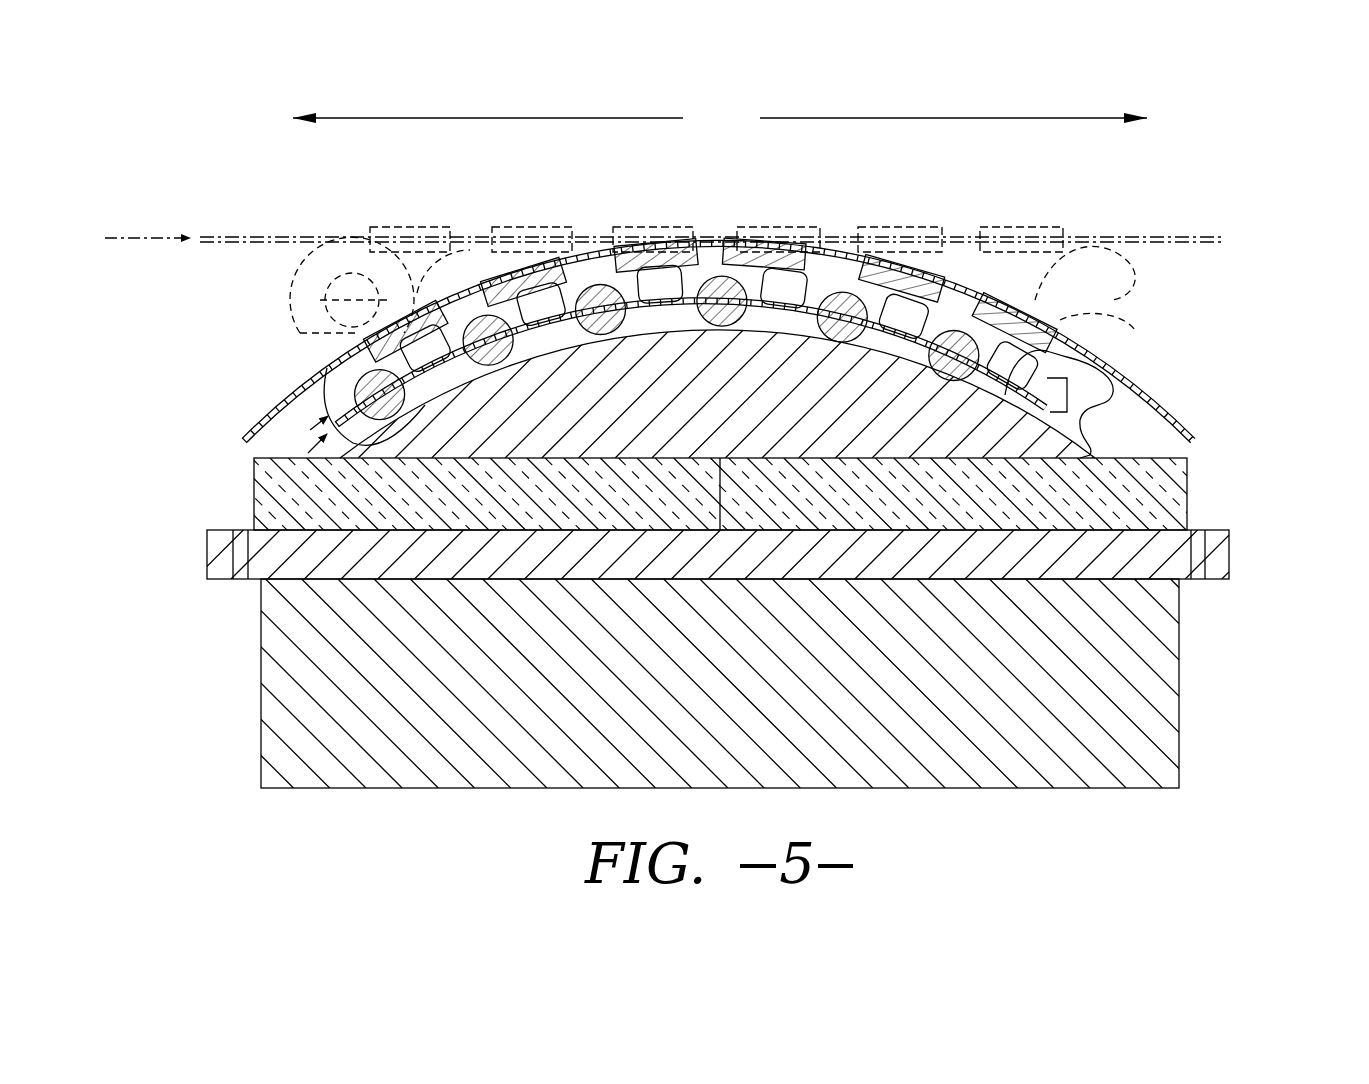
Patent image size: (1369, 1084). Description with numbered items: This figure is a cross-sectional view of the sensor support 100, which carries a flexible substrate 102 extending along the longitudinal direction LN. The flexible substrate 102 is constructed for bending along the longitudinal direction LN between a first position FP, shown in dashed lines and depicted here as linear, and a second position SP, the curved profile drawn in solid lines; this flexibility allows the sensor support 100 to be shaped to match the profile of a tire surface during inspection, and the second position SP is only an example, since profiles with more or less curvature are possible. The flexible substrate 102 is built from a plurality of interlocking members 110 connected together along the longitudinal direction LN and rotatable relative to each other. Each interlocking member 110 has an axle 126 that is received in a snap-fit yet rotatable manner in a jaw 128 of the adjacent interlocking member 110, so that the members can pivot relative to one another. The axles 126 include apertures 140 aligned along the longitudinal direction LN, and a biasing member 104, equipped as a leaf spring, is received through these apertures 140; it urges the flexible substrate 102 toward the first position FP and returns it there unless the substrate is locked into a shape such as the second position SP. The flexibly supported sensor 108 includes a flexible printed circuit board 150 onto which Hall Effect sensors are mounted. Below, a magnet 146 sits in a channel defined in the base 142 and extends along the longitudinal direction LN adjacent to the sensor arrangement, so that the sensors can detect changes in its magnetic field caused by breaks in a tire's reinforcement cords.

The sensor support 100 is at (1255, 283).
The flexible substrate 102 is at (248, 430).
The biasing member 104 is at (1100, 343).
The flexibly supported sensor 108 is at (1193, 437).
The interlocking member 110 is at (595, 270).
The axle 126 is at (455, 290).
The jaw 128 is at (1097, 417).
The aperture 140 is at (568, 322).
The base 142 is at (1150, 698).
The magnet 146 is at (1157, 493).
The flexible printed circuit board 150 is at (280, 403).
The second position SP is at (300, 455).
The first position FP is at (645, 239).
The longitudinal direction LN is at (720, 119).